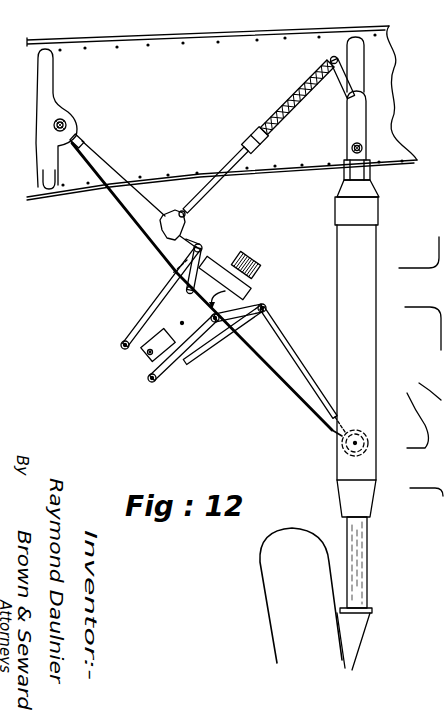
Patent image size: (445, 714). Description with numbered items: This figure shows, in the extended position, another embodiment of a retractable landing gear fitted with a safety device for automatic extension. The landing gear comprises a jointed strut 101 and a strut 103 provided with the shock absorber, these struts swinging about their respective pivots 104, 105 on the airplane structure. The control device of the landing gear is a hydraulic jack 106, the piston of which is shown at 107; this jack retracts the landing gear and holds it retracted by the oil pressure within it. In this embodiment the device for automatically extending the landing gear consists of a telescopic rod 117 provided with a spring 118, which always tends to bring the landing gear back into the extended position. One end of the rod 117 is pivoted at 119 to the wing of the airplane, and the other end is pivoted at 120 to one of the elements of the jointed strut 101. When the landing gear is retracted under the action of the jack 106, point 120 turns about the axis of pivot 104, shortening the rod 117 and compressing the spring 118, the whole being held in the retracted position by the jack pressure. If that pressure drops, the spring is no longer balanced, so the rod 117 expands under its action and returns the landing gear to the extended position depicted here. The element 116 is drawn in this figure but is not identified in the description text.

The jointed strut 101 is at (271, 344).
The strut provided with the shock absorber 103 is at (360, 270).
The pivot of strut 101 104 is at (70, 119).
The pivot of strut 103 105 is at (352, 148).
The hydraulic jack 106 is at (182, 324).
The piston 107 is at (147, 352).
The cylinder 116 is at (229, 278).
The telescopic rod 117 is at (242, 140).
The spring 118 is at (284, 97).
The pivot of rod 117 to the wing 119 is at (330, 59).
The pivot of rod 117 to strut 101 120 is at (187, 218).